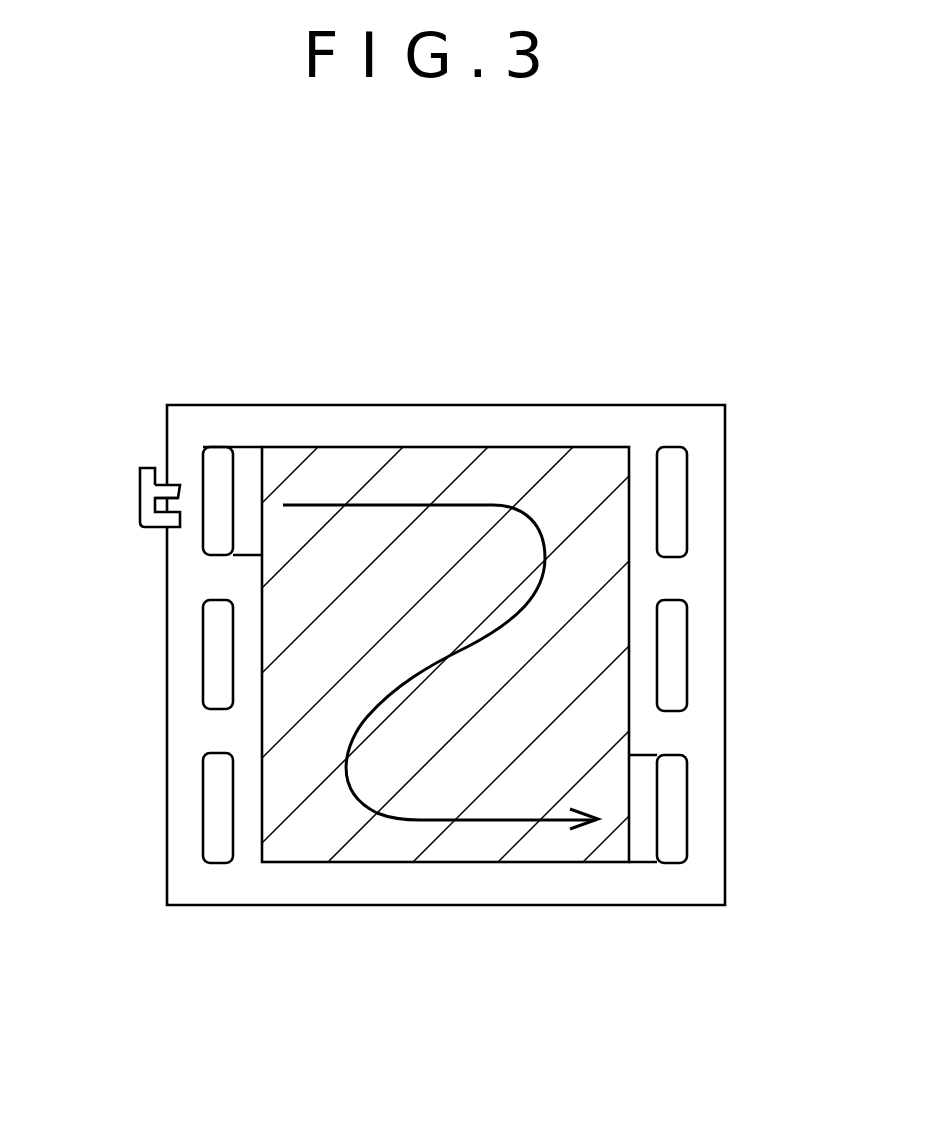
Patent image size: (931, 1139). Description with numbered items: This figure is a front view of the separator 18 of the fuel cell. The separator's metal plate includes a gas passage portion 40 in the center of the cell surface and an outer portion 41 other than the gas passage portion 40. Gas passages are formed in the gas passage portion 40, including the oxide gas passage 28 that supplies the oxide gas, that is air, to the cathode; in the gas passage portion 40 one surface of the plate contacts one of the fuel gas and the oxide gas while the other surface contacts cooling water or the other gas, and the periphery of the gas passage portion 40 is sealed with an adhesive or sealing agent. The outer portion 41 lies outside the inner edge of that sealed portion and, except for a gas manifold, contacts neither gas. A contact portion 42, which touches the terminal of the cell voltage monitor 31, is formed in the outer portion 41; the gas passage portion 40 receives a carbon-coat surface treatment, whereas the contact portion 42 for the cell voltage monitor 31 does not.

The separator 18 is at (725, 590).
The gas passage portion 40 is at (585, 447).
The outer portion 41 is at (182, 629).
The cell voltage monitor 31 is at (138, 507).
The contact portion 42 is at (172, 490).
The oxide gas passage 28 is at (440, 821).